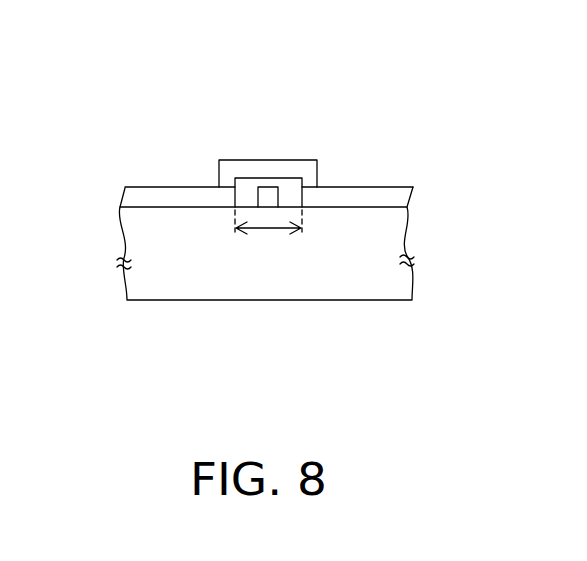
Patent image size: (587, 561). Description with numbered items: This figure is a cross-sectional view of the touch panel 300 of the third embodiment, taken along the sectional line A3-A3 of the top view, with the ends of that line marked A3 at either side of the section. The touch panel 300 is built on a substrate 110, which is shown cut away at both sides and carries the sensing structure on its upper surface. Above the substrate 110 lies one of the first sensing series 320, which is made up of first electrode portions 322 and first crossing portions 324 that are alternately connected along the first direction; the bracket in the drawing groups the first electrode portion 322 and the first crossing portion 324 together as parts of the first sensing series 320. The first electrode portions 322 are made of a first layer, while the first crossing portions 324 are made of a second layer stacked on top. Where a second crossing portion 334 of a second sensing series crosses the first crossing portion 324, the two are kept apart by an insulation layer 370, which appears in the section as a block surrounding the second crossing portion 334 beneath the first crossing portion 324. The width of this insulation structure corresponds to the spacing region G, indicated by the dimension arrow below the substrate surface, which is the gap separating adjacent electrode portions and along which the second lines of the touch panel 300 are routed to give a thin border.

The touch panel 300 is at (494, 376).
The substrate 110 is at (395, 238).
The first sensing series 320 is at (280, 62).
The first electrode portion 322 is at (362, 200).
The first crossing portion 324 is at (288, 168).
The insulation layer 370 is at (245, 188).
The second crossing portion 334 is at (270, 190).
The spacing region G is at (268, 236).
The sectional line A3- A3 is at (271, 118).